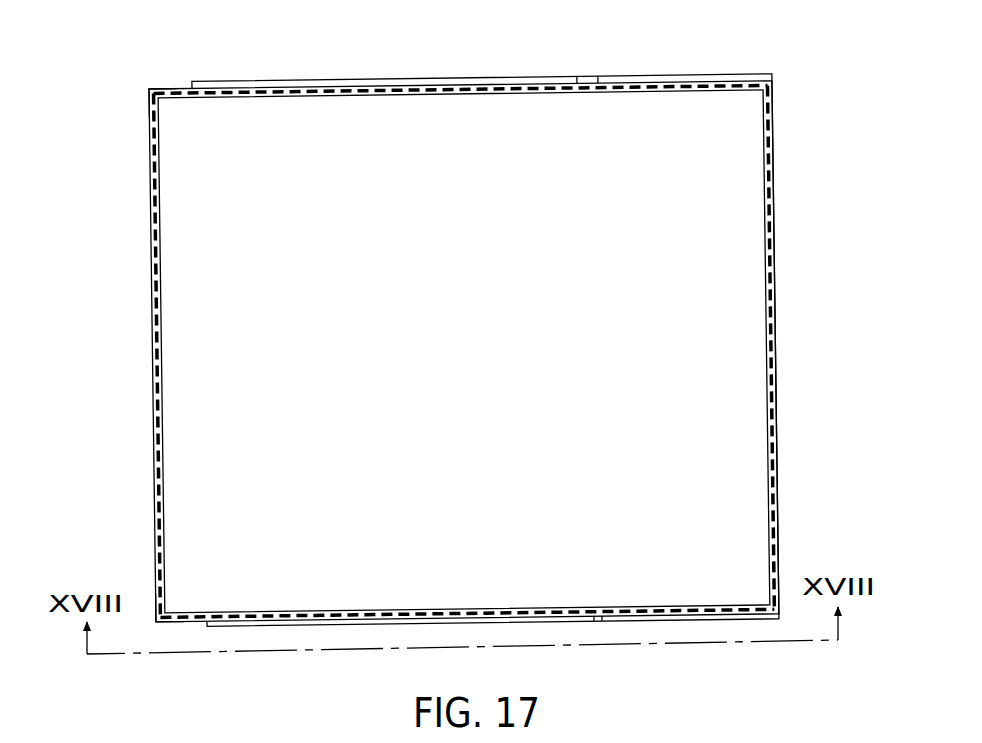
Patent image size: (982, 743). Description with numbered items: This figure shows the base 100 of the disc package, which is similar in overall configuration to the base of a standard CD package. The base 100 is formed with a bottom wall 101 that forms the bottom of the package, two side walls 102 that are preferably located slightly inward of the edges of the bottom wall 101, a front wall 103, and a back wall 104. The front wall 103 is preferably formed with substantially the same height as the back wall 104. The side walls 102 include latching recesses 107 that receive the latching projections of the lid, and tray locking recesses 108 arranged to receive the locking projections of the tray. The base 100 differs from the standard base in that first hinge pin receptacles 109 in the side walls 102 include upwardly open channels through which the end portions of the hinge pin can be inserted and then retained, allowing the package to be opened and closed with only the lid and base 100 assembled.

The base 100 is at (146, 72).
The bottom wall 101 is at (472, 342).
The side walls 102 is at (345, 82).
The front wall 103 is at (776, 338).
The back wall 104 is at (149, 284).
The latching recesses 107 is at (590, 82).
The tray locking recesses 108 is at (202, 91).
The first hinge pin receptacles 109 is at (172, 97).